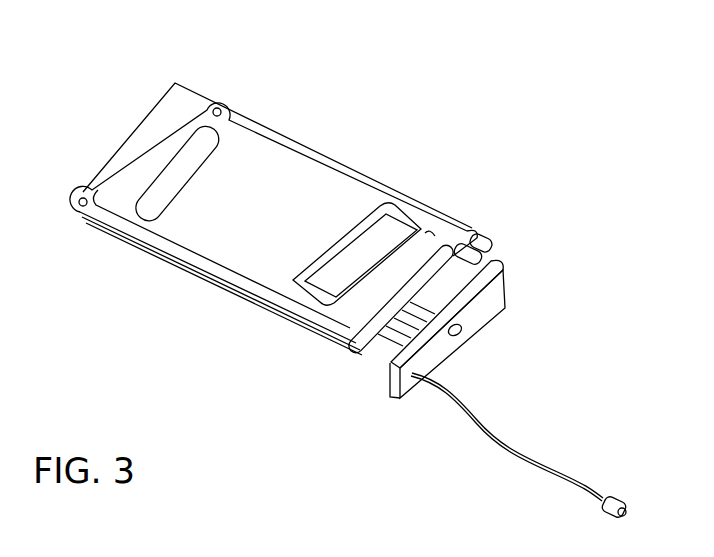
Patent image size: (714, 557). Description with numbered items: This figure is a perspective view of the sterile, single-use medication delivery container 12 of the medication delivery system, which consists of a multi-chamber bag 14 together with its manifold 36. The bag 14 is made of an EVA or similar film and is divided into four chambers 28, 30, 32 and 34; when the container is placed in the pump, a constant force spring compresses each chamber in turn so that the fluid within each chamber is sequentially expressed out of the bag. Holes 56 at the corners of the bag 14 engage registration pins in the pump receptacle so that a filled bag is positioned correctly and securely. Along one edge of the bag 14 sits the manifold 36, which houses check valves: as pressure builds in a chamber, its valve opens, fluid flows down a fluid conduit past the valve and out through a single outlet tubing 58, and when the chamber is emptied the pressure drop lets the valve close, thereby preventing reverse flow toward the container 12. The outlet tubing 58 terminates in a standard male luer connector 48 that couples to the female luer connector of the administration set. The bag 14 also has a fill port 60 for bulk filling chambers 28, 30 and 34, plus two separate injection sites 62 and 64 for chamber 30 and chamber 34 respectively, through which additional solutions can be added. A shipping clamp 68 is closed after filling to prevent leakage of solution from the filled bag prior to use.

The medication delivery container 12 is at (527, 66).
The multi-chamber bag 14 is at (335, 158).
The first chamber 28 is at (137, 180).
The second chamber 30 is at (262, 207).
The third chamber 32 is at (347, 268).
The fourth chamber 34 is at (392, 275).
The manifold 36 is at (415, 378).
The male luer connector 48 is at (602, 512).
The holes 56 is at (176, 83).
The outlet tubing 58 is at (480, 425).
The fill port 60 is at (460, 333).
The injection site 62 is at (485, 237).
The injection site 64 is at (483, 260).
The shipping clamp 68 is at (340, 353).